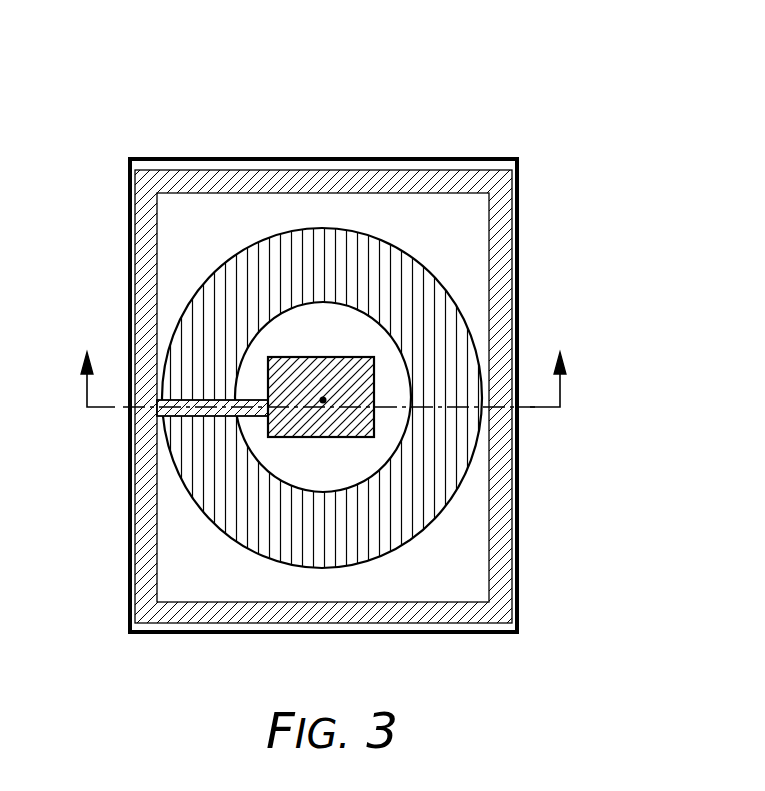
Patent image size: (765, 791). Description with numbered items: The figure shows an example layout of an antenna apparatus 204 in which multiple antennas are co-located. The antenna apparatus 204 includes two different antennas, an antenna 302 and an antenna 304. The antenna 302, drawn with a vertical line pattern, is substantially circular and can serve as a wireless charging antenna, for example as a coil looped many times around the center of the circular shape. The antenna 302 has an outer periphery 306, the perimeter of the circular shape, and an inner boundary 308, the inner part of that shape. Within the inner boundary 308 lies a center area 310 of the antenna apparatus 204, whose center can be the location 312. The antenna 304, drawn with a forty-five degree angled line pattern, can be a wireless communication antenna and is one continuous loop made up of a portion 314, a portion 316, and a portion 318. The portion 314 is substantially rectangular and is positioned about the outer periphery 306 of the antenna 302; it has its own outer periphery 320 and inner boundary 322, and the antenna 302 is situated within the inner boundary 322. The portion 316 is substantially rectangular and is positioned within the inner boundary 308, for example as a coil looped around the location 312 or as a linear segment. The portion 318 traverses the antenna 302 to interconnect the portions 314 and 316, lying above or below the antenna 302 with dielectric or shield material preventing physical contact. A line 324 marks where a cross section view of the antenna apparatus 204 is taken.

The antenna apparatus 204 is at (520, 222).
The antenna 302 is at (387, 229).
The antenna 304 is at (186, 164).
The outer periphery 306 is at (437, 270).
The inner boundary 308 is at (412, 395).
The center area 310 is at (325, 326).
The location 312 is at (323, 400).
The portion 314 is at (175, 594).
The portion 316 is at (261, 348).
The portion 318 is at (177, 393).
The outer periphery 320 is at (137, 492).
The inner boundary 322 is at (157, 540).
The line 324 is at (535, 408).